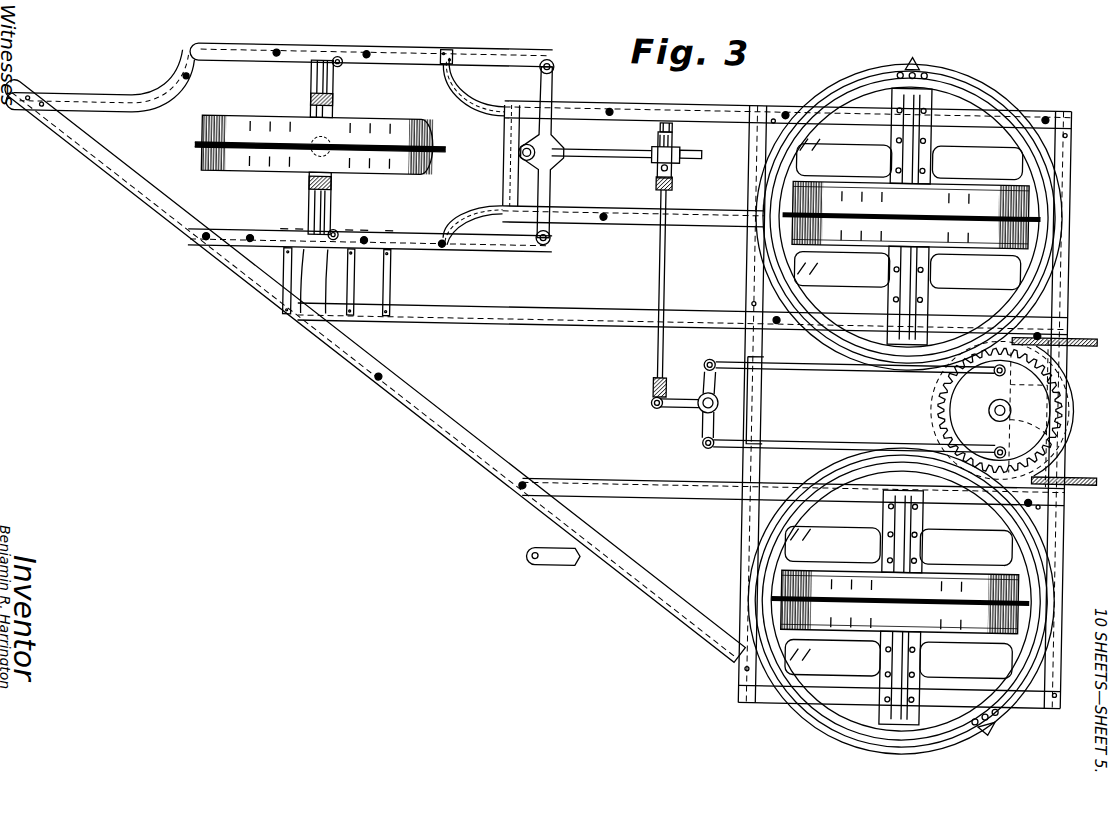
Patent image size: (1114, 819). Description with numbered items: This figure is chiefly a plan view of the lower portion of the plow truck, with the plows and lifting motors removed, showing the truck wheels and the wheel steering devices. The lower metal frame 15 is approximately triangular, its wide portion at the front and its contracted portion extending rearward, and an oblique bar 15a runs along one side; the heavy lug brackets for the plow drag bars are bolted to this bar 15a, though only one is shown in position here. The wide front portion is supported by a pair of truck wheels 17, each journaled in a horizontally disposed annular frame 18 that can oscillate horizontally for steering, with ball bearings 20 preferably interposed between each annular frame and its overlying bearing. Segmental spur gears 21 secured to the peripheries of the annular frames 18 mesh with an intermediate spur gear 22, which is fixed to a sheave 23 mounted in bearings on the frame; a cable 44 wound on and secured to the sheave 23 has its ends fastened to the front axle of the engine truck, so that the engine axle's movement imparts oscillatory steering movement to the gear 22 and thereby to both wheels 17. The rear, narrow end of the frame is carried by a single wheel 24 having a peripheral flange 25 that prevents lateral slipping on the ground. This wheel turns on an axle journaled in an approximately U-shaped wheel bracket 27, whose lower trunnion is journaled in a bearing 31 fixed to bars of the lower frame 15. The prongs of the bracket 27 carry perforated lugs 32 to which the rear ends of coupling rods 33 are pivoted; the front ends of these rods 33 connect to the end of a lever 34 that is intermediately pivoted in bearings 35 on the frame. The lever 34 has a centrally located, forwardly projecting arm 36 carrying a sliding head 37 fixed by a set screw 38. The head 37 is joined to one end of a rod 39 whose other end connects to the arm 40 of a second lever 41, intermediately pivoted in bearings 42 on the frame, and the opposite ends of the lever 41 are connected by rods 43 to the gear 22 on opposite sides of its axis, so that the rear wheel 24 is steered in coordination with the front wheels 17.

The lower metal frame 15 is at (184, 80).
The oblique bar 15a is at (441, 424).
The truck wheel 17 is at (796, 225).
The annular frame 18 is at (980, 92).
The ball bearings 20 is at (906, 55).
The segmental spur gear 21 is at (935, 364).
The intermediate spur gear 22 is at (944, 415).
The sheave 23 is at (935, 392).
The single wheel 24 is at (220, 122).
The peripheral flange 25 is at (195, 151).
The wheel bracket 27 is at (329, 104).
The bearing 31 is at (312, 289).
The perforated lugs 32 is at (333, 61).
The coupling rods 33 is at (476, 66).
The lever 34 is at (547, 96).
The bearings 35 is at (515, 158).
The arm 36 is at (599, 157).
The sliding head 37 is at (673, 150).
The set screw 38 is at (654, 126).
The rod 39 is at (656, 283).
The arm 40 is at (672, 404).
The lever 41 is at (702, 372).
The bearings 42 is at (726, 417).
The rods 43 is at (823, 367).
The cable 44 is at (1073, 329).